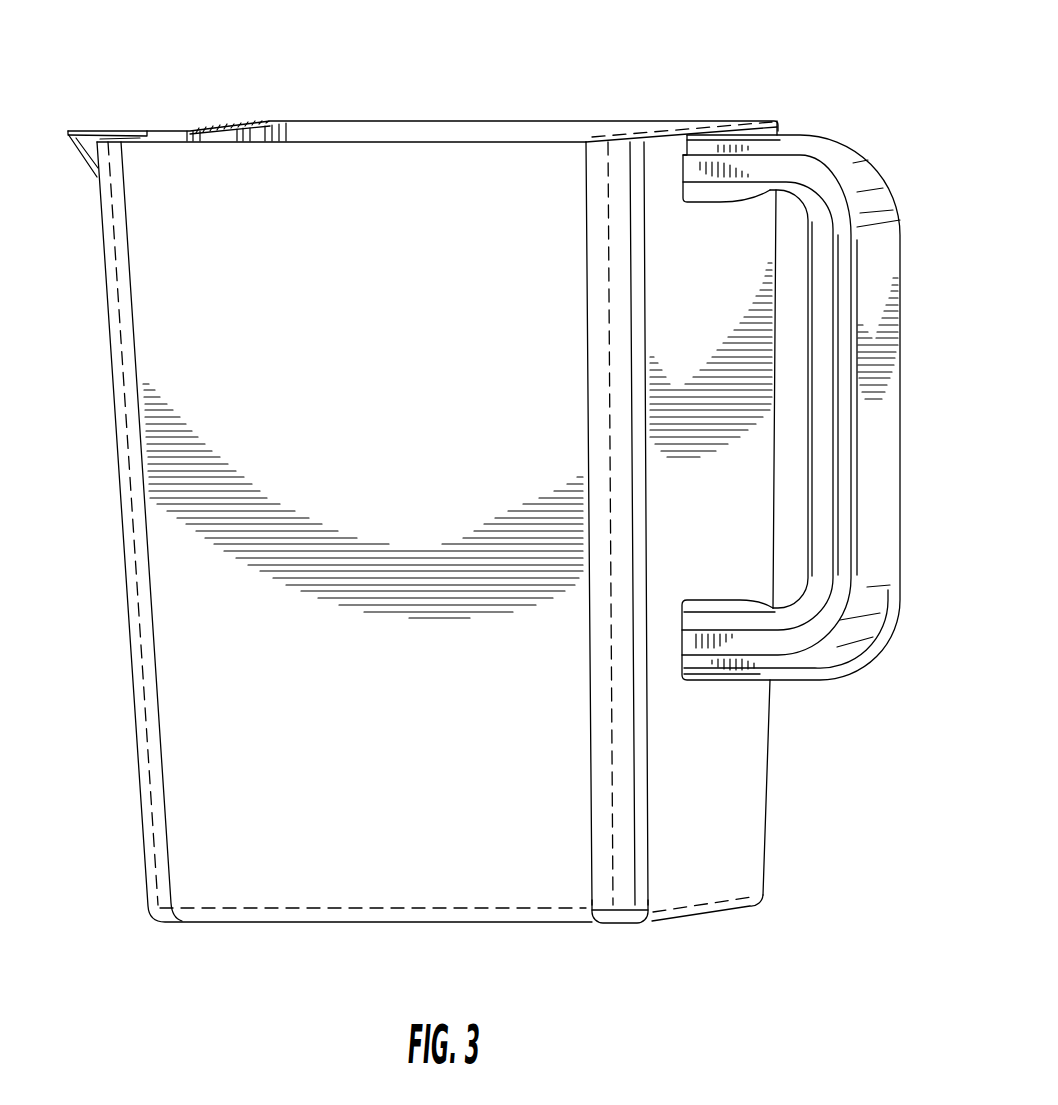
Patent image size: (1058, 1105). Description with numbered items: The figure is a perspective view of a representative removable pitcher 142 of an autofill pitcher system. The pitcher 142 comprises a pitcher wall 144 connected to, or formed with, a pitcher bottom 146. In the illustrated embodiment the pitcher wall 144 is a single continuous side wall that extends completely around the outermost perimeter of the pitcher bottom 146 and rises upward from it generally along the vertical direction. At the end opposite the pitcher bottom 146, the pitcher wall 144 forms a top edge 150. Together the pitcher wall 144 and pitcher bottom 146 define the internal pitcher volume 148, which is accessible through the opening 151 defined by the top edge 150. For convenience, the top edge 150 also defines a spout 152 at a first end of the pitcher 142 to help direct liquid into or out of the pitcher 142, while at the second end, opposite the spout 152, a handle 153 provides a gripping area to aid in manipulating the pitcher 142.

The pitcher 142 is at (499, 506).
The pitcher wall 144 is at (198, 723).
The pitcher bottom 146 is at (577, 925).
The pitcher volume 148 is at (347, 132).
The top edge 150 is at (583, 122).
The opening 151 is at (463, 130).
The spout 152 is at (82, 132).
The handle 153 is at (895, 438).